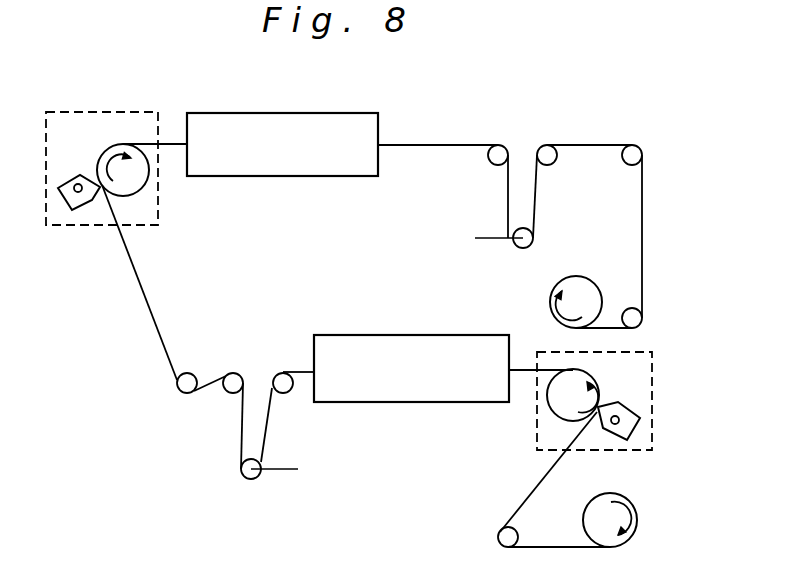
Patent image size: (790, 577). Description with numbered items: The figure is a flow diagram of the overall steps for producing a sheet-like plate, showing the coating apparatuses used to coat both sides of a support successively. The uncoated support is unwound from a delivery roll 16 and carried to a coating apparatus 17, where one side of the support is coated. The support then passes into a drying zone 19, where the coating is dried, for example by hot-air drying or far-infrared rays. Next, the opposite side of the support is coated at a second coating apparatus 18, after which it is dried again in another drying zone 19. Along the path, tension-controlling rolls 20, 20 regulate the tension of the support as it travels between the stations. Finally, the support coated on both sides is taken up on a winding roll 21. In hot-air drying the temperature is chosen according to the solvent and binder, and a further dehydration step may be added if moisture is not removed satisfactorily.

The delivery roll 16 is at (618, 497).
The coating apparatus 17 is at (628, 393).
The coating apparatus 18 is at (145, 208).
The drying zone 19 is at (295, 165).
The tension-controlling roll 20 is at (532, 230).
The winding roll 21 is at (585, 288).